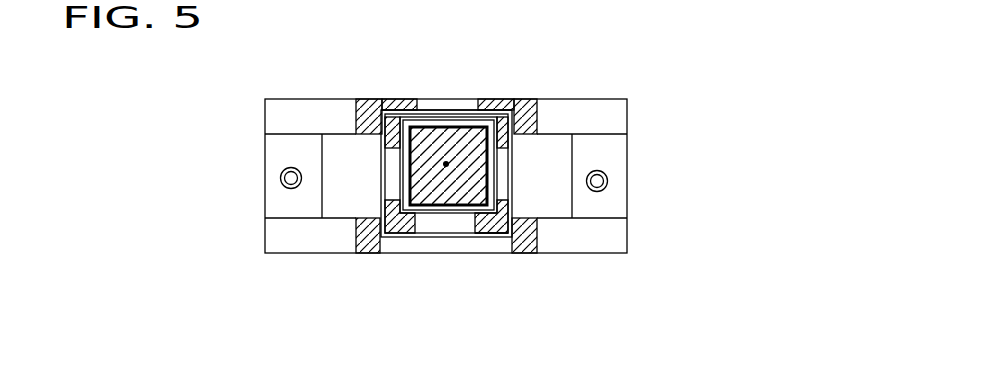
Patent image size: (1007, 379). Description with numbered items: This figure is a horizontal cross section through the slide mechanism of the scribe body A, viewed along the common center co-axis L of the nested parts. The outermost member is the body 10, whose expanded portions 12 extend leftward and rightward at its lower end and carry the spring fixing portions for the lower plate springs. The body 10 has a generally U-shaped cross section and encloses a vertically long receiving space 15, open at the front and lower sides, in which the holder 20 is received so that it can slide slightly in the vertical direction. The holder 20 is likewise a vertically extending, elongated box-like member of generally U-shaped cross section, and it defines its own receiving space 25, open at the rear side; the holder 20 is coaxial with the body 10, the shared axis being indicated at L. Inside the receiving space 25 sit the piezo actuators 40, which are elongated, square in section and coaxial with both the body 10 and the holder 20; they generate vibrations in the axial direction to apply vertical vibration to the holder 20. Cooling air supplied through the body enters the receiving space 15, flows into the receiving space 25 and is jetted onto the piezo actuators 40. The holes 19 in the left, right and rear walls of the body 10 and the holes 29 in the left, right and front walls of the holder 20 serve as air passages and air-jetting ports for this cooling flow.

The body 10 is at (552, 89).
The expanded portion 12 is at (287, 115).
The receiving space 15 is at (378, 238).
The hole 19 is at (467, 101).
The holder 20 is at (492, 244).
The receiving space 25 is at (482, 203).
The hole 29 is at (393, 175).
The piezo actuator 40 is at (456, 127).
The scribe body A is at (390, 86).
The center co-axis L is at (446, 164).